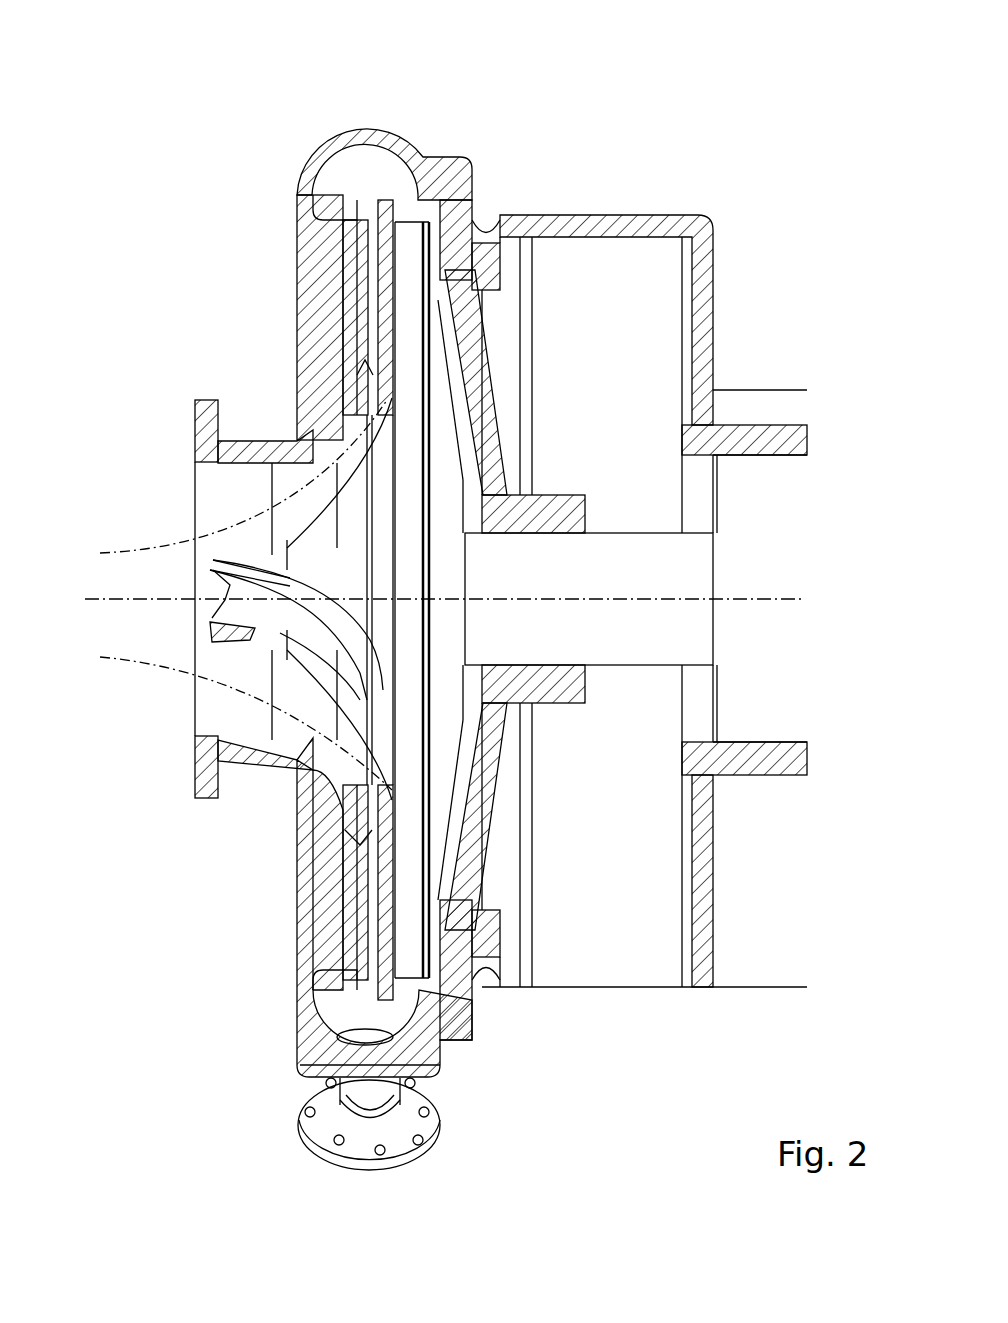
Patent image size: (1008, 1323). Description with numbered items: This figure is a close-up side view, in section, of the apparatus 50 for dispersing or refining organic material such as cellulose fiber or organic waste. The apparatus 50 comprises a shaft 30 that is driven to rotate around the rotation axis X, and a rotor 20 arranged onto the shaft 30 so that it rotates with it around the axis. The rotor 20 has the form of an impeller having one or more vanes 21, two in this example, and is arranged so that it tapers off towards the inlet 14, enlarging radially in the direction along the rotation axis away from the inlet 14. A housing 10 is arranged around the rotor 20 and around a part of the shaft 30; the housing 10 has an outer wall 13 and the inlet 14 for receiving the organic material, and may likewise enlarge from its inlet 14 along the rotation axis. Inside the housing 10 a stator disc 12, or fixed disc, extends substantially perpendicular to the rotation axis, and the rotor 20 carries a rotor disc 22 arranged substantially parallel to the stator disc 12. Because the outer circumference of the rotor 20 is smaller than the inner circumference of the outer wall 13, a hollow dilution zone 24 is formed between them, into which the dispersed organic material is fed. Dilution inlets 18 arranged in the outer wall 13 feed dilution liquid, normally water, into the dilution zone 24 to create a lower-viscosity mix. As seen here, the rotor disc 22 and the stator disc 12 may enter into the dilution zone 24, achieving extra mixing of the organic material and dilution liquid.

The apparatus 50 is at (252, 195).
The housing 10 is at (305, 256).
The stator disc 12 is at (345, 150).
The outer wall 13 is at (381, 170).
The inlet 14 is at (212, 693).
The dilution inlet 18 is at (420, 1127).
The rotor 20 is at (400, 775).
The vane 21 is at (375, 690).
The rotor disc 22 is at (405, 140).
The dilution zone 24 is at (370, 170).
The shaft 30 is at (663, 540).